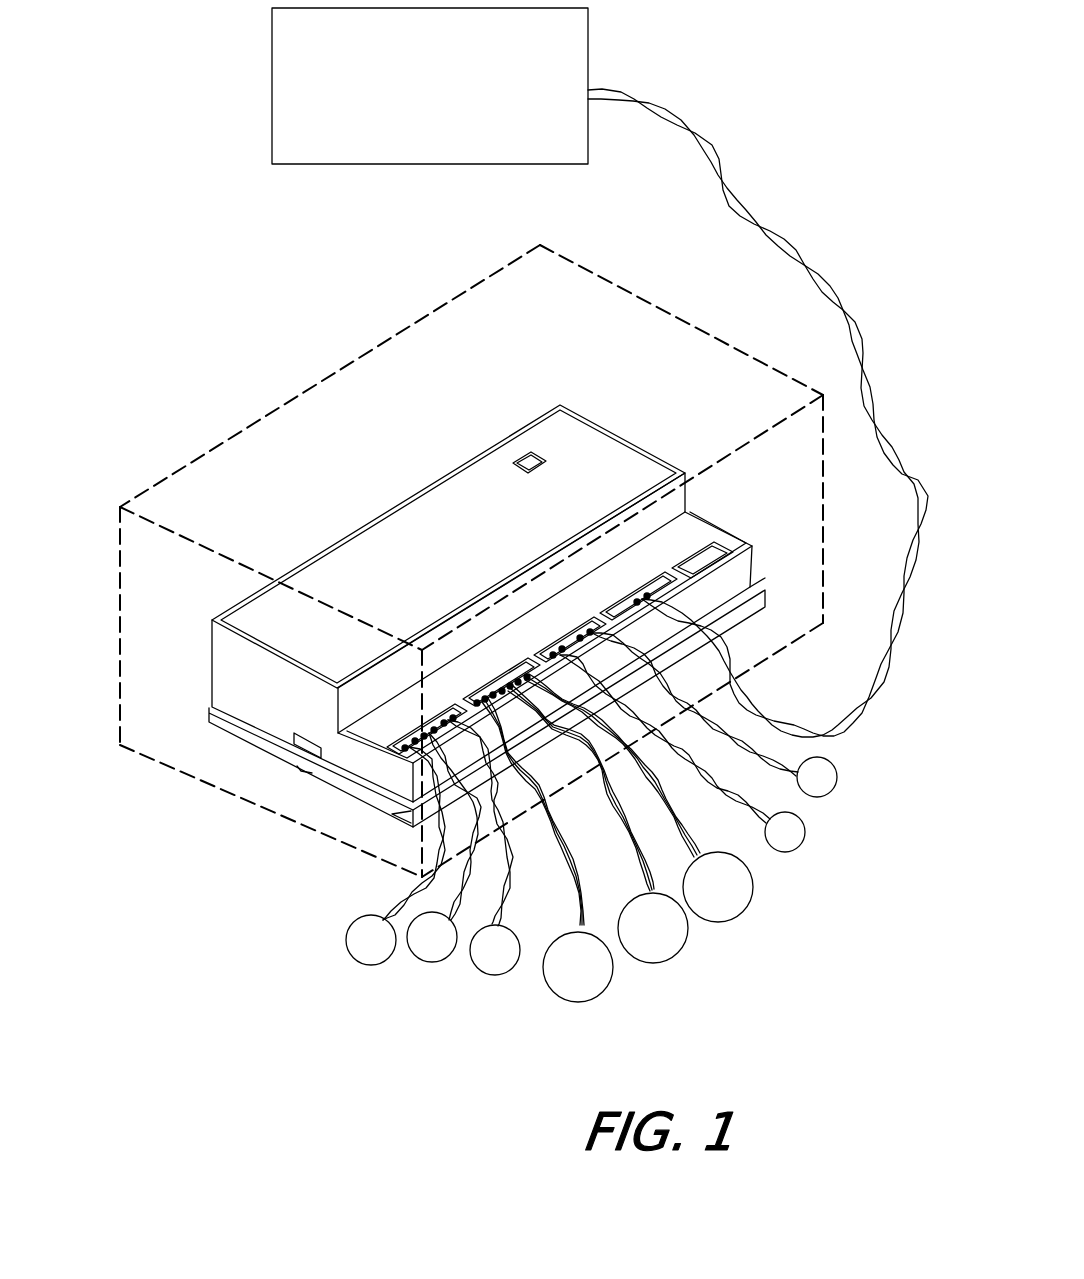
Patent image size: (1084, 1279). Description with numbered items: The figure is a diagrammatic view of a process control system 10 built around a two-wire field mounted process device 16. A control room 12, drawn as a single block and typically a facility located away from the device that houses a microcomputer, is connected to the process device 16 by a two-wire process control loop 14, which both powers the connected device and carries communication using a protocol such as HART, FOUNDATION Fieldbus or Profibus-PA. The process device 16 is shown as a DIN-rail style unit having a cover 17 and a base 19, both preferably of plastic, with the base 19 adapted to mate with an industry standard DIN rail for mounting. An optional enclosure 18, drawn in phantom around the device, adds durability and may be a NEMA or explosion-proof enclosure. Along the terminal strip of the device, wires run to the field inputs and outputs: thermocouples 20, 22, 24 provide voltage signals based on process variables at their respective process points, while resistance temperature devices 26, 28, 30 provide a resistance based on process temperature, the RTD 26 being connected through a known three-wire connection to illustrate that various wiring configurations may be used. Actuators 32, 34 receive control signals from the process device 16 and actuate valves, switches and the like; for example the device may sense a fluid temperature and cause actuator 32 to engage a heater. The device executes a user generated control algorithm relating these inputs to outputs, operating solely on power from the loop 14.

The process control system 10 is at (203, 392).
The control room 12 is at (524, 153).
The process control loop 14 is at (826, 274).
The process device 16 is at (452, 624).
The cover 17 is at (363, 522).
The enclosure 18 is at (120, 600).
The base 19 is at (254, 748).
The thermocouple 20 is at (346, 942).
The thermocouple 22 is at (430, 962).
The thermocouple 24 is at (495, 975).
The resistance temperature device 26 is at (612, 985).
The resistance temperature device 28 is at (688, 945).
The resistance temperature device 30 is at (753, 893).
The actuator 32 is at (805, 832).
The actuator 34 is at (837, 775).